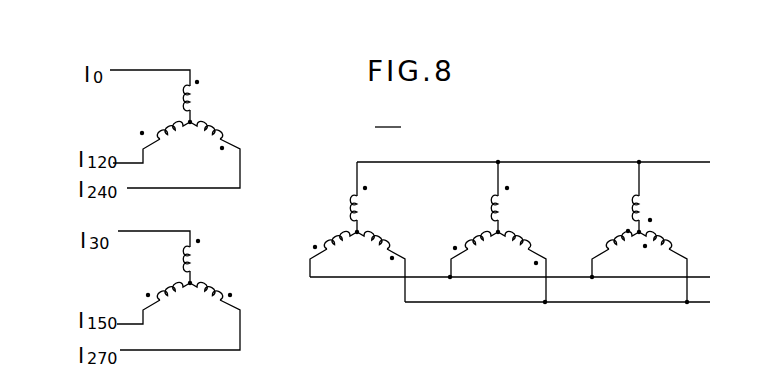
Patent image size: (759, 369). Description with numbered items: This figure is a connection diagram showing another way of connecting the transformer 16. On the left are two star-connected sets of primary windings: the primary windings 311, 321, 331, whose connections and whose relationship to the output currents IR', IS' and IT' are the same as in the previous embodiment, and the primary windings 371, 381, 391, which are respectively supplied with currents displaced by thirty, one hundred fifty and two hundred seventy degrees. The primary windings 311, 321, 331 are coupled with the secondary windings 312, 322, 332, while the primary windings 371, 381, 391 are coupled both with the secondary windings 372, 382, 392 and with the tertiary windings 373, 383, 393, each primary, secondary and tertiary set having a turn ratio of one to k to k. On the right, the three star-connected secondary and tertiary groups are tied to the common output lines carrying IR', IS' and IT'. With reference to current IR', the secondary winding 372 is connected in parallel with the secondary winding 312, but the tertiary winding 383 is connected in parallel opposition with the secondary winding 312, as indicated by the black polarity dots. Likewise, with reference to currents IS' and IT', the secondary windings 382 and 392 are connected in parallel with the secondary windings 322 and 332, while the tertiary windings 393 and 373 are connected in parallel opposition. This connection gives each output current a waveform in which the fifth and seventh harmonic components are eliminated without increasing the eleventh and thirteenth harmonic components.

The transformer 16 is at (522, 212).
The primary winding 311 is at (221, 96).
The primary winding 321 is at (157, 114).
The primary winding 331 is at (236, 134).
The primary winding 371 is at (221, 257).
The primary winding 381 is at (160, 278).
The primary winding 391 is at (238, 292).
The secondary winding 312 is at (388, 207).
The secondary winding 322 is at (322, 227).
The secondary winding 332 is at (400, 245).
The secondary winding 372 is at (530, 202).
The secondary winding 382 is at (470, 212).
The secondary winding 392 is at (538, 241).
The tertiary winding 383 is at (672, 207).
The tertiary winding 393 is at (612, 209).
The tertiary winding 373 is at (681, 242).